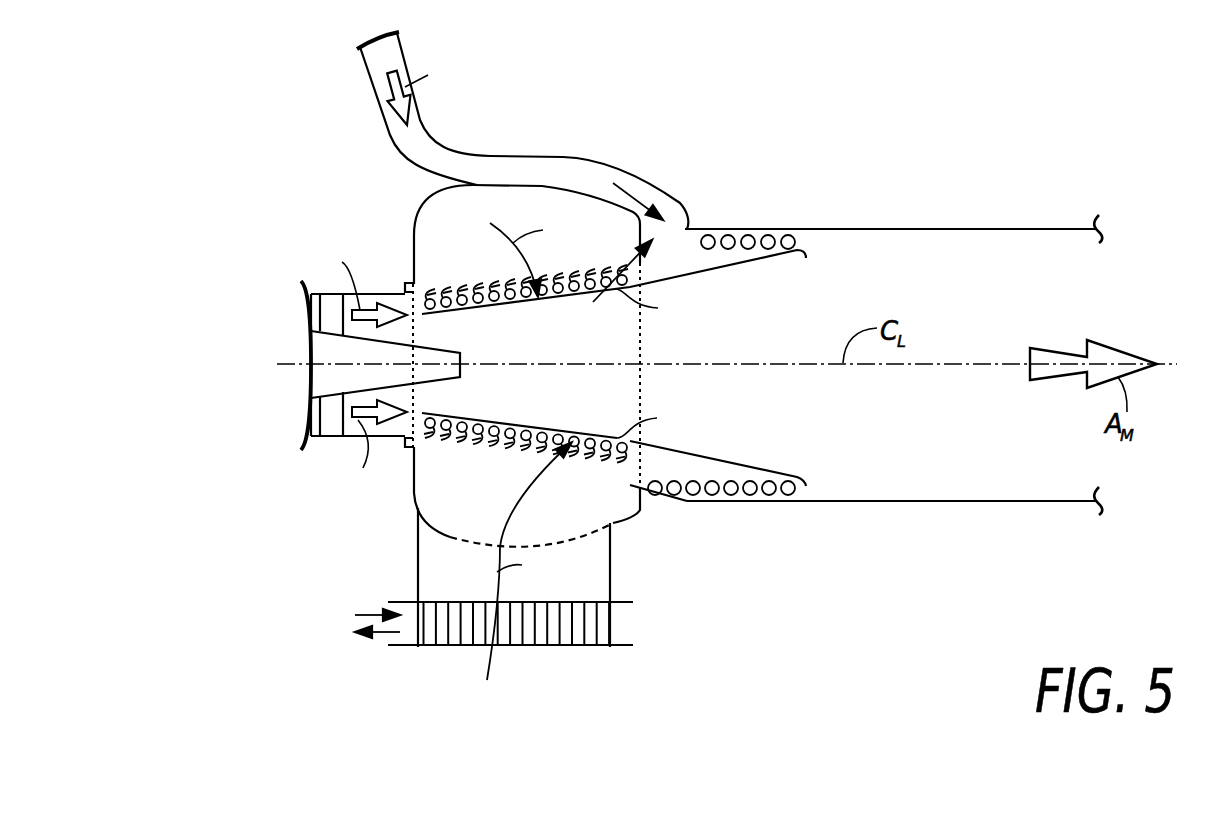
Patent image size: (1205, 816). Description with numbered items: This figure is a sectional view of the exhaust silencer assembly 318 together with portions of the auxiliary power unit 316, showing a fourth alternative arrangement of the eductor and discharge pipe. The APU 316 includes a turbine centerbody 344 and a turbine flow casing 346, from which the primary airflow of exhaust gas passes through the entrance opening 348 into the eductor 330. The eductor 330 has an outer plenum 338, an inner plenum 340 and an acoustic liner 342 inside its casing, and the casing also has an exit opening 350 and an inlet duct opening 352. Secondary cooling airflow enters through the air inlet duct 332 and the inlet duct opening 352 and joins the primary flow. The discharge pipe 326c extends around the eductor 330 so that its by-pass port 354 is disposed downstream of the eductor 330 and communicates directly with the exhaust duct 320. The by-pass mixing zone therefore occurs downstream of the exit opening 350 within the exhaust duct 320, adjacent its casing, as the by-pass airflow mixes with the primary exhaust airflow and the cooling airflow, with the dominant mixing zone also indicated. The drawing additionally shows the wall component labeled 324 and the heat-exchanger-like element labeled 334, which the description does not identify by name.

The auxiliary power unit 316 is at (243, 284).
The exhaust silencer assembly 318 is at (738, 158).
The exhaust duct 320 is at (927, 501).
The dome wall 324 is at (296, 382).
The discharge pipe 326c is at (387, 127).
The eductor 330 is at (385, 238).
The air inlet duct 332 is at (418, 555).
The heat exchanger 334 is at (573, 622).
The outer plenum 338 is at (533, 218).
The inner plenum 340 is at (606, 361).
The acoustic liner 342 is at (497, 273).
The turbine centerbody 344 is at (318, 346).
The turbine flow casing 346 is at (327, 294).
The entrance opening 348 is at (413, 332).
The exit opening 350 is at (645, 375).
The inlet duct opening 352 is at (545, 537).
The by-pass port 354 is at (668, 242).